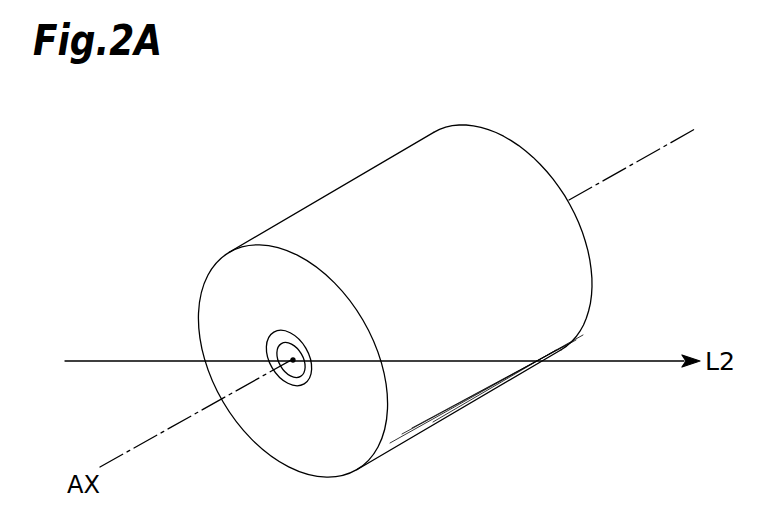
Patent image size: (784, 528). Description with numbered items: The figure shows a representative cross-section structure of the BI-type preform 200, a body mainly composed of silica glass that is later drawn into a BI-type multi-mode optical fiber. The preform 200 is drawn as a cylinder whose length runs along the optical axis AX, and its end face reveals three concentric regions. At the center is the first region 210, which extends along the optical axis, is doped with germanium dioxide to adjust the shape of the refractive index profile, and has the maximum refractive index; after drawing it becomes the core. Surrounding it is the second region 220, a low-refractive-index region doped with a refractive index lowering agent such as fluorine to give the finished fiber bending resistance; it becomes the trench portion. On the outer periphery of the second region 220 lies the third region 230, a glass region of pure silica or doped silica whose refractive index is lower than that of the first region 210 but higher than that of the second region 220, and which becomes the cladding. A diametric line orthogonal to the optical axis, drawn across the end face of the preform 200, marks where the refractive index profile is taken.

The BI-type preform 200 is at (385, 293).
The third region 230 is at (240, 270).
The second region 220 is at (268, 340).
The first region 210 is at (281, 349).